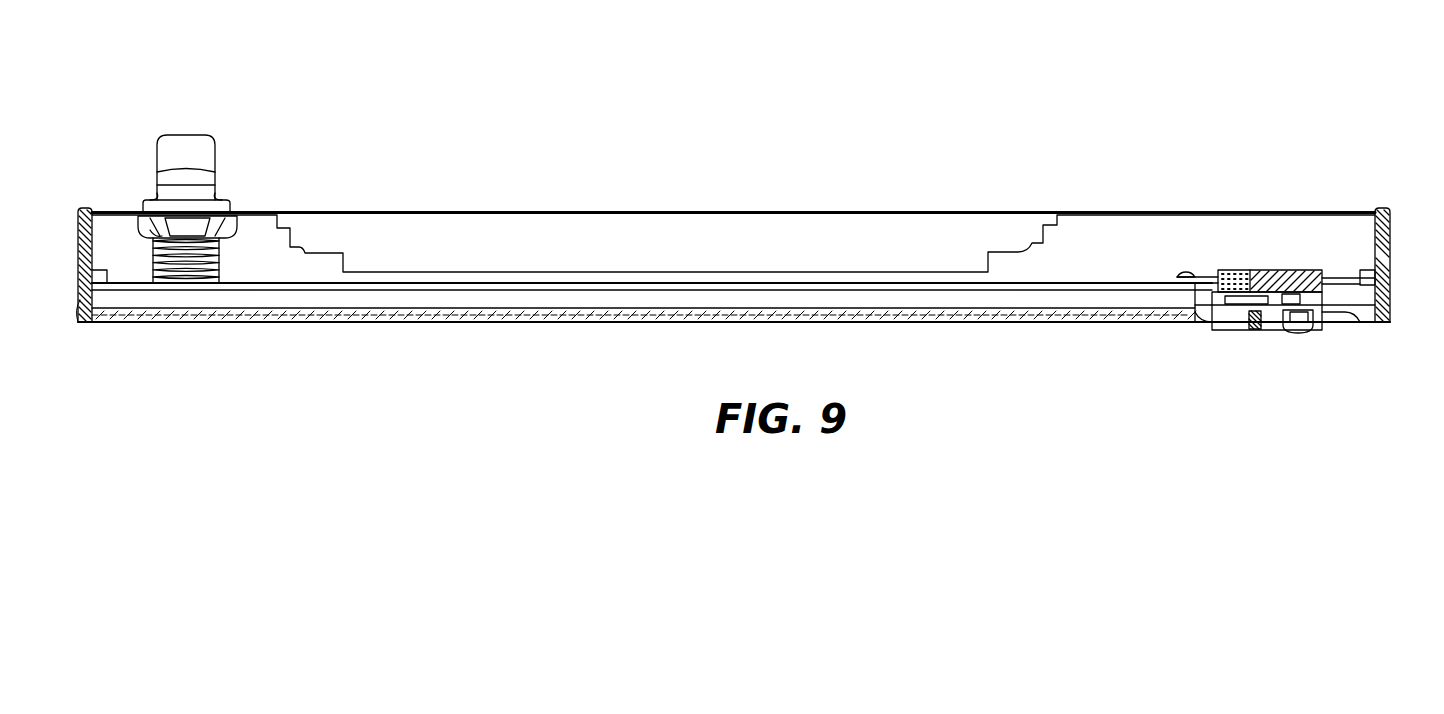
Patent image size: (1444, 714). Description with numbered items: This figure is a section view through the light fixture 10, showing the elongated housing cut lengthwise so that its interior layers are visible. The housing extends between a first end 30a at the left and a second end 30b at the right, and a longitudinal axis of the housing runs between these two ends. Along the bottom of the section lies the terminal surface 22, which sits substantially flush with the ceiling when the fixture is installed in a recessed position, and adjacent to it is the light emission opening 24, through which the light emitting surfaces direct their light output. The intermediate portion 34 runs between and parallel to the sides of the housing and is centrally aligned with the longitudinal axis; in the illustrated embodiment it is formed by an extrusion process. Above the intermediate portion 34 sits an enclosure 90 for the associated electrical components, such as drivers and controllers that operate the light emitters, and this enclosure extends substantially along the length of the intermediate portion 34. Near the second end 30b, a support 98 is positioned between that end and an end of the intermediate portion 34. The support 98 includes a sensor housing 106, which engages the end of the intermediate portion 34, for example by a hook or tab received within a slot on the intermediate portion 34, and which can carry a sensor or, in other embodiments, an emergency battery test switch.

The light fixture 10 is at (790, 122).
The terminal surface 22 is at (495, 323).
The light emission opening 24 is at (637, 322).
The first end 30a is at (60, 245).
The second end 30b is at (1400, 245).
The intermediate portion 34 is at (847, 323).
The enclosure 90 is at (257, 217).
The support 98 is at (1282, 253).
The sensor housing 106 is at (1207, 327).